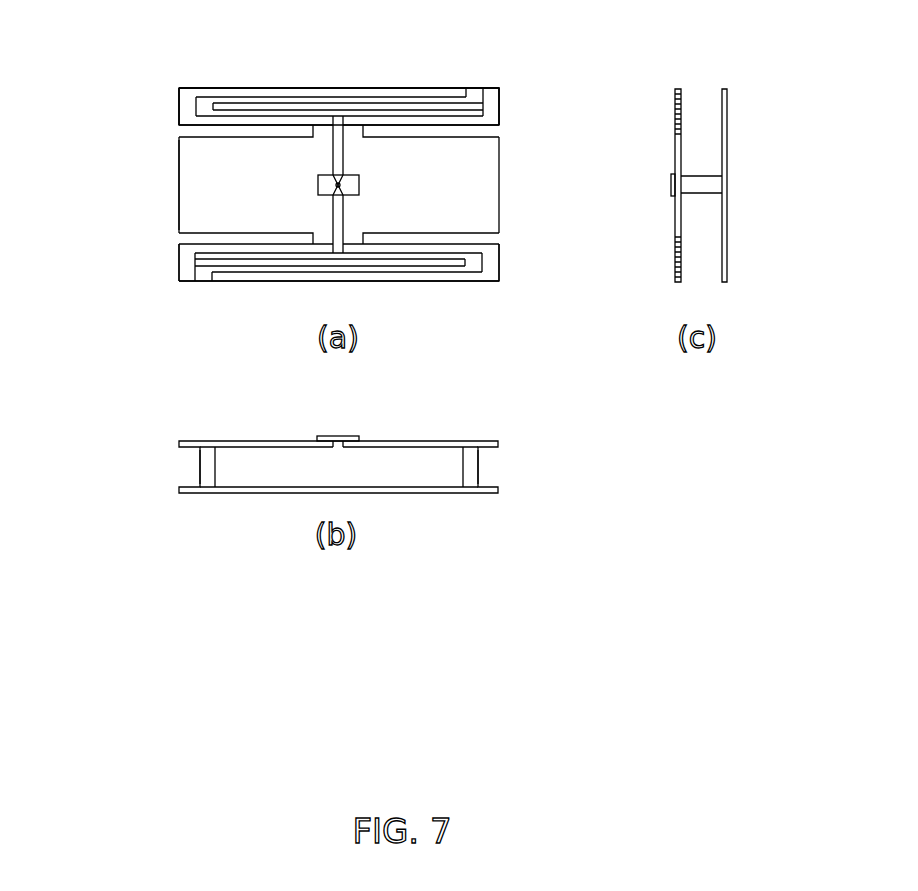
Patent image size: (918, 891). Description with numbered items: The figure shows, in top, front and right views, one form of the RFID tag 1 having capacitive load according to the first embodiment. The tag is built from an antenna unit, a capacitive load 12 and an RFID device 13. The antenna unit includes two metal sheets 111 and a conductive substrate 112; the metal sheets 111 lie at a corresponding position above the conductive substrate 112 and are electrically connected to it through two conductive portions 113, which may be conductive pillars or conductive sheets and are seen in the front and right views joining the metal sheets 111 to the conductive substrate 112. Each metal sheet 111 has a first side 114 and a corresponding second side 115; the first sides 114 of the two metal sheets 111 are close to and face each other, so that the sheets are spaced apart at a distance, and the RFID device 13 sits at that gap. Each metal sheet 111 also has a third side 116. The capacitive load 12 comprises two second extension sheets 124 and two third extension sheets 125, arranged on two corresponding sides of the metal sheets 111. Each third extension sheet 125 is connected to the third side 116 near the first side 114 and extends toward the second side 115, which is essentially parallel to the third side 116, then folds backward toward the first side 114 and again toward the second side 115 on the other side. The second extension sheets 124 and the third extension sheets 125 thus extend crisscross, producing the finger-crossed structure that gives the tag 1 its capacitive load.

The RFID tag having capacitive load 1 is at (94, 94).
The capacitive load 12 is at (359, 80).
The RFID device 13 is at (352, 183).
The metal sheet 111 is at (178, 210).
The conductive substrate 112 is at (244, 489).
The conductive portion 113 is at (206, 467).
The first side 114 is at (334, 222).
The second side 115 is at (178, 175).
The third side 116 is at (189, 135).
The second extension sheet 124 is at (187, 102).
The third extension sheet 125 is at (188, 274).